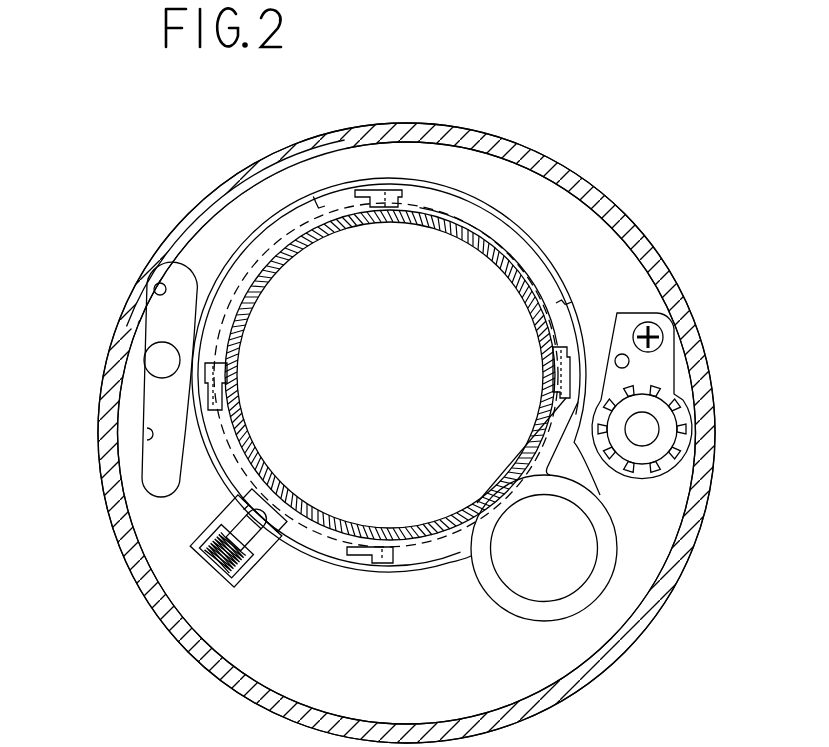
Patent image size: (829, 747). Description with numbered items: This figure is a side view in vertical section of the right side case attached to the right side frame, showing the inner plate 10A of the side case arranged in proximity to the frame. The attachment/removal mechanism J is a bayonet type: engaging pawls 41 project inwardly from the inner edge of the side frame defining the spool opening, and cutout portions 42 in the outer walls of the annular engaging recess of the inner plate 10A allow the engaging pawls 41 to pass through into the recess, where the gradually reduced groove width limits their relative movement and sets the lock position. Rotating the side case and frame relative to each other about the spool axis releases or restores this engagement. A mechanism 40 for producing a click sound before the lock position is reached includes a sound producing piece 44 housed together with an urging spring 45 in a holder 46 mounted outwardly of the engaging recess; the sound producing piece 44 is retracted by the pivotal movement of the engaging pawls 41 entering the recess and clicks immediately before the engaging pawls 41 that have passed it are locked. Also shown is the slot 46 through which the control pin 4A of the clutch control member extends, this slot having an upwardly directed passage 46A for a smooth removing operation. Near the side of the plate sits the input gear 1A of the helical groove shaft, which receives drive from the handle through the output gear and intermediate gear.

The click sound producing mechanism 40 is at (198, 592).
The cutout portions 42 is at (318, 210).
The engaging pawls 41 is at (388, 205).
The inner plate 10A is at (487, 240).
The holder 46 is at (147, 440).
The upwardly directed passage 46A is at (158, 290).
The control pin 4A is at (162, 365).
The sound producing piece 44 is at (270, 513).
The urging spring 45 is at (266, 563).
The attachment/removal mechanism J is at (394, 590).
The input gear 1A is at (632, 478).